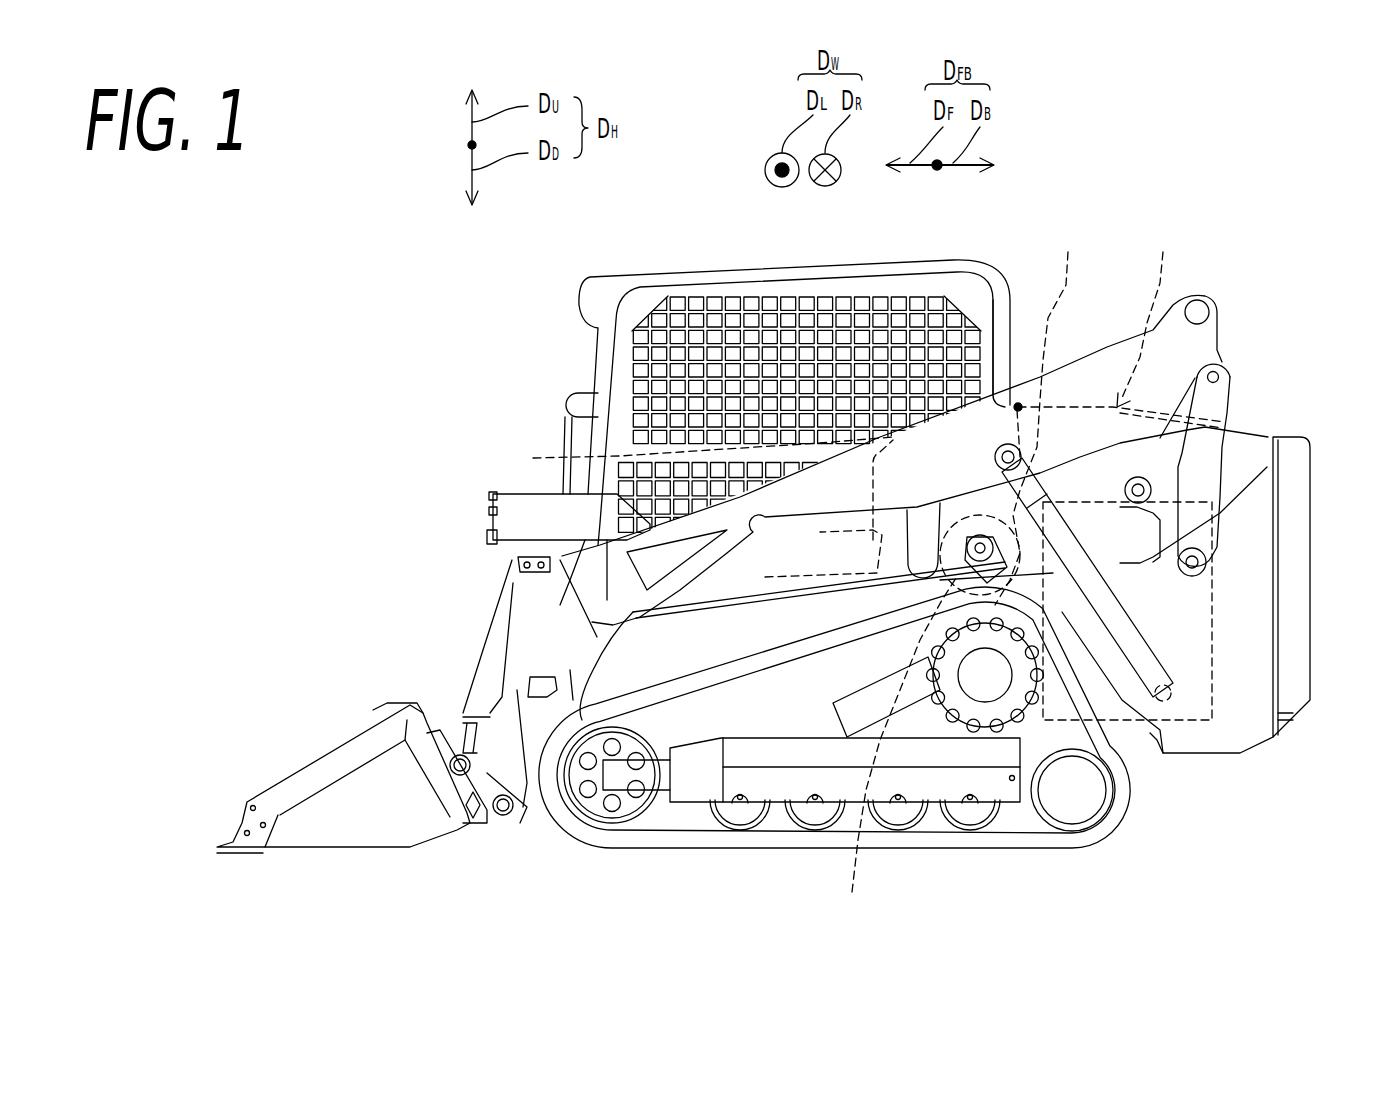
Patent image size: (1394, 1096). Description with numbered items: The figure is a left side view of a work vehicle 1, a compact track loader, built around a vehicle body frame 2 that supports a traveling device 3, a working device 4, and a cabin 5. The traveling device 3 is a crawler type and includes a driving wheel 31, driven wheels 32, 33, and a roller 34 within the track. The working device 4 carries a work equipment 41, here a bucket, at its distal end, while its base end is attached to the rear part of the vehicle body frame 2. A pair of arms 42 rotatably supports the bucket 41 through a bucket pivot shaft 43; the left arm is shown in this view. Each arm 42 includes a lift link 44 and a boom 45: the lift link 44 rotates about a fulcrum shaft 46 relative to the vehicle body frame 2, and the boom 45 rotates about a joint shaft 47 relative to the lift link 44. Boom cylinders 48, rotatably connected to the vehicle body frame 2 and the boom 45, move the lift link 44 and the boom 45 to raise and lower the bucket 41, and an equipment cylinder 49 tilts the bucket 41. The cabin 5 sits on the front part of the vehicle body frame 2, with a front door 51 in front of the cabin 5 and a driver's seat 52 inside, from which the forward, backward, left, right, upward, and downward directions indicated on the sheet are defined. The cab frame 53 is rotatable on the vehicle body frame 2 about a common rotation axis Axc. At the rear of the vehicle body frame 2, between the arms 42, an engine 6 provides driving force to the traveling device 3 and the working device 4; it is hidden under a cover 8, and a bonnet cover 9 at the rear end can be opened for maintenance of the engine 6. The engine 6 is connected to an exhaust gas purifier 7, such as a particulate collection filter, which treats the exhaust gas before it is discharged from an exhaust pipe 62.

The work vehicle 1 is at (341, 386).
The vehicle body frame 2 is at (1270, 760).
The traveling device 3 is at (1117, 834).
The driving wheel 31 is at (980, 675).
The driven wheel 32 is at (636, 810).
The driven wheel 33 is at (1052, 807).
The roller 34 is at (820, 828).
The working device 4 is at (475, 608).
The work equipment 41 is at (320, 740).
The arm 42 is at (1220, 300).
The bucket pivot shaft 43 is at (503, 817).
The lift link 44 is at (1217, 403).
The boom 45 is at (1210, 342).
The fulcrum shaft 46 is at (1207, 563).
The joint shaft 47 is at (1218, 377).
The boom cylinder 48 is at (1160, 658).
The equipment cylinder 49 is at (493, 668).
The cabin 5 is at (580, 355).
The front door 51 is at (575, 408).
The driver's seat 52 is at (697, 457).
The cab frame 53 is at (1000, 313).
The engine 6 is at (1200, 722).
The exhaust pipe 62 is at (1040, 410).
The exhaust gas purifier 7 is at (901, 750).
The cover 8 is at (1145, 311).
The bonnet cover 9 is at (1297, 527).
The common rotation axis Axc is at (1015, 402).